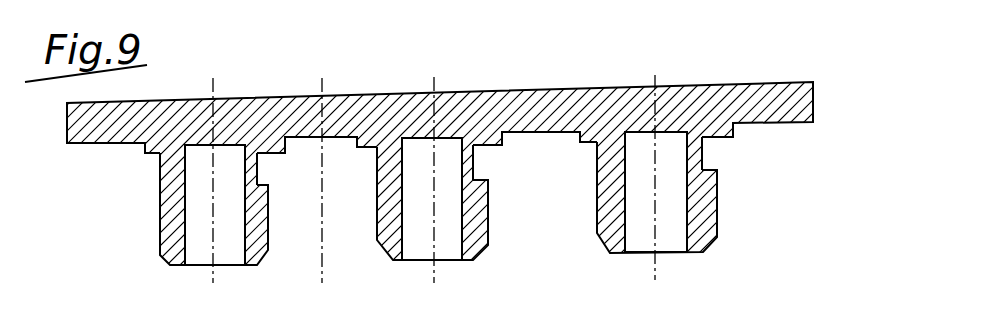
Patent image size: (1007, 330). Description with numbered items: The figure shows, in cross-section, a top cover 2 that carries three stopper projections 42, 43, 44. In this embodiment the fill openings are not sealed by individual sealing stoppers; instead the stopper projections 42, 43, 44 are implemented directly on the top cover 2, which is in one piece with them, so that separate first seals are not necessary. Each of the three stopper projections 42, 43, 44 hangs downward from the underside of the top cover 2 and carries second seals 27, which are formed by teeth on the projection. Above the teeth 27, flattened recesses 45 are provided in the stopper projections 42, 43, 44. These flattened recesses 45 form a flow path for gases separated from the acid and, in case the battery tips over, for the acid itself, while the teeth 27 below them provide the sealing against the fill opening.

The top cover 2 is at (488, 115).
The second seal 27 is at (158, 200).
The stopper projection 42 is at (175, 233).
The stopper projection 43 is at (387, 225).
The stopper projection 44 is at (613, 230).
The flattened recess 45 is at (257, 166).